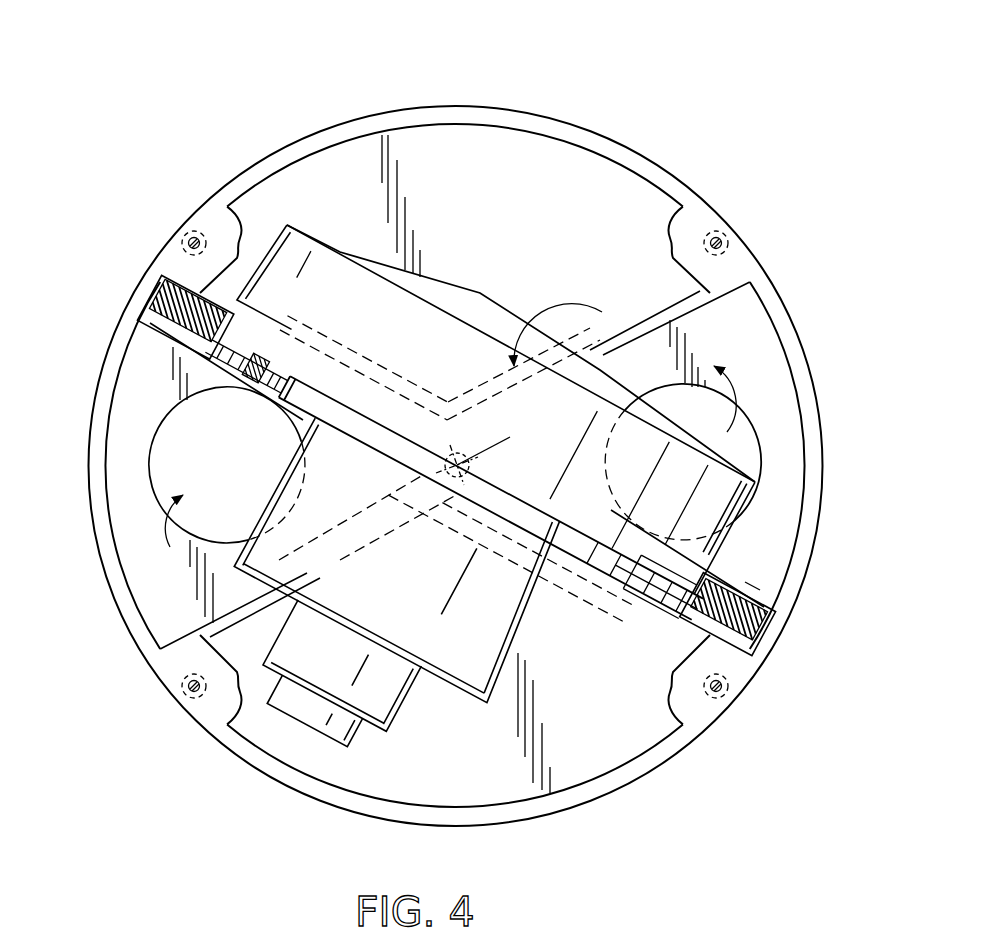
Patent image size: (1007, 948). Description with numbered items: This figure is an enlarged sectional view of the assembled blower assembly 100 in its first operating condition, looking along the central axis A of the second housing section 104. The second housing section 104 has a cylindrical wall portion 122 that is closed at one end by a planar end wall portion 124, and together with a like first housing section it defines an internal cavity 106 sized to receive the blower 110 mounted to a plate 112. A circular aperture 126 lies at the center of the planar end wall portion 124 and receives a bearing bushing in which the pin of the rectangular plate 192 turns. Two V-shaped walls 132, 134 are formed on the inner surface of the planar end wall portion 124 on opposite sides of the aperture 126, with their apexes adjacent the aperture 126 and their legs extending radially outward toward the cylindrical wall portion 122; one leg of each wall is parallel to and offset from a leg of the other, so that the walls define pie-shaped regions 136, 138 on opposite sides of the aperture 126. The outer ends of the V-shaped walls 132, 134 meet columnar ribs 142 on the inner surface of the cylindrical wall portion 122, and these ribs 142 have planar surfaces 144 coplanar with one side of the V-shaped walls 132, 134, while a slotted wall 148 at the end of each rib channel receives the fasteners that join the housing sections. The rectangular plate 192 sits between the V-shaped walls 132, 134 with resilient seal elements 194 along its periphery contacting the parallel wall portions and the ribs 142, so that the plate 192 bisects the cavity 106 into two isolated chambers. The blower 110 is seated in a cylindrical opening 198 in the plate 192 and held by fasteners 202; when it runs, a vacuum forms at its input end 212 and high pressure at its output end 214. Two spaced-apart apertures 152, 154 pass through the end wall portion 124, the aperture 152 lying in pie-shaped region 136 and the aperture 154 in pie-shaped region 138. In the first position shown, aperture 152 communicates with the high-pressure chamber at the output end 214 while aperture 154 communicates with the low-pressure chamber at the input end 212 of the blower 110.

The blower assembly 100 is at (630, 86).
The second housing section 104 is at (503, 107).
The internal cavity 106 is at (585, 185).
The blower 110 is at (494, 282).
The plate 112 is at (745, 582).
The cylindrical wall portion 122 is at (330, 124).
The planar end wall portion 124 is at (758, 343).
The circular aperture 126 is at (423, 528).
The V-shaped wall 132 is at (643, 323).
The V-shaped wall 134 is at (612, 592).
The pie-shaped region 136 is at (130, 413).
The pie-shaped region 138 is at (777, 382).
The columnar rib 142 is at (217, 233).
The planar surface 144 is at (749, 281).
The slotted wall 148 is at (177, 250).
The aperture 152 is at (150, 487).
The aperture 154 is at (750, 445).
The rectangular plate 192 is at (667, 603).
The seal element 194 is at (163, 337).
The cylindrical opening 198 is at (290, 375).
The fastener 202 is at (253, 370).
The input end 212 is at (512, 310).
The output end 214 is at (360, 737).